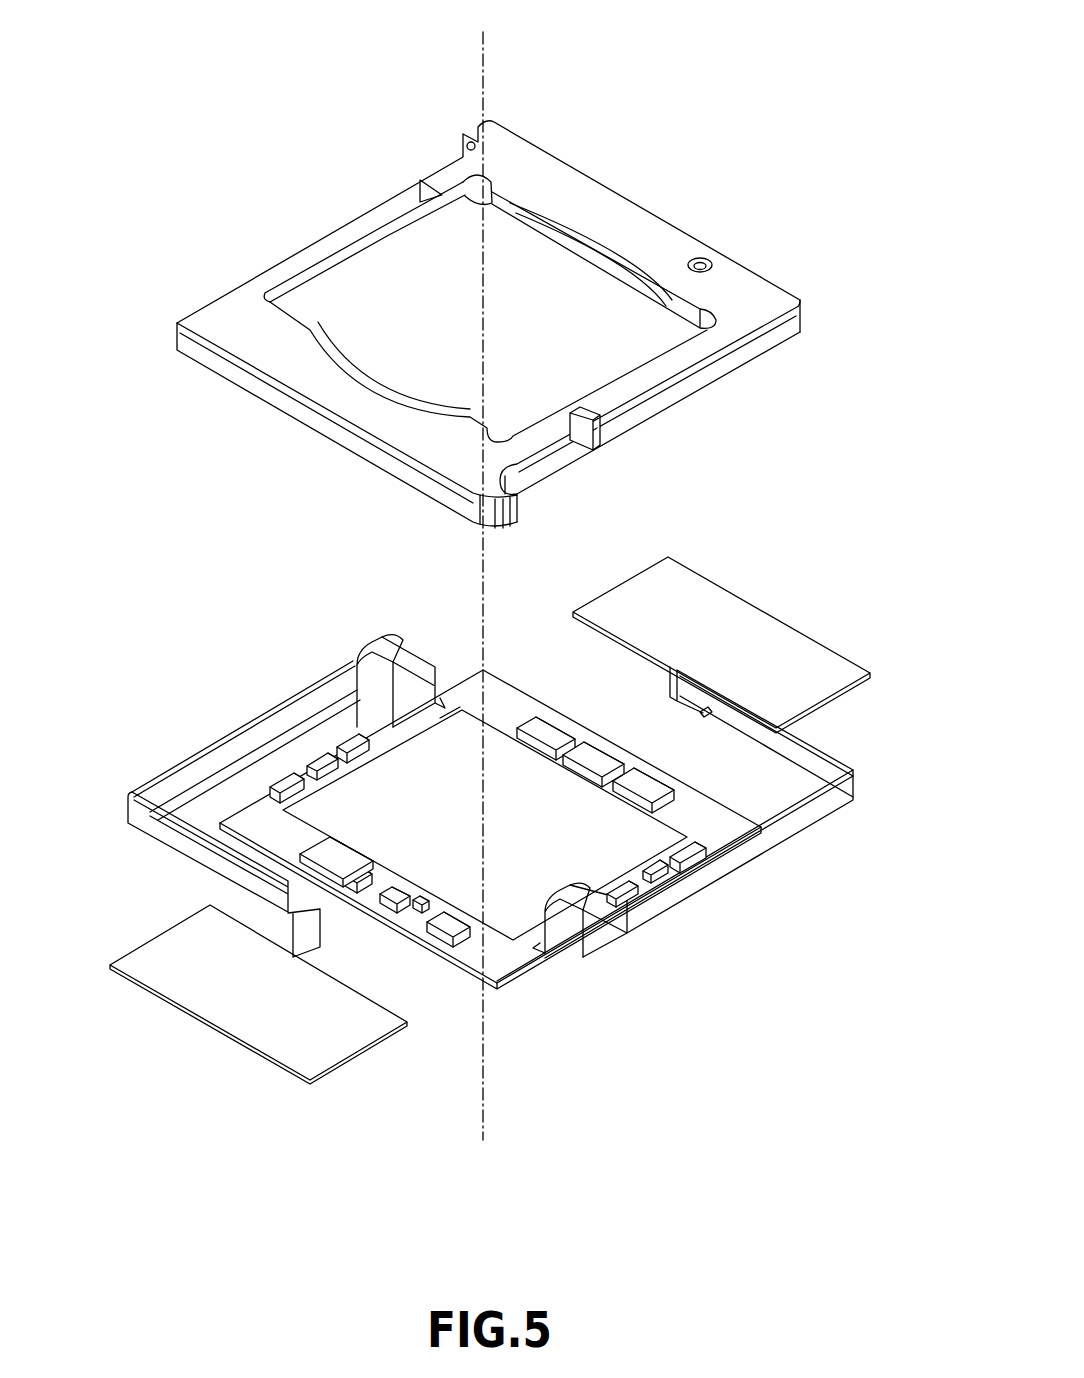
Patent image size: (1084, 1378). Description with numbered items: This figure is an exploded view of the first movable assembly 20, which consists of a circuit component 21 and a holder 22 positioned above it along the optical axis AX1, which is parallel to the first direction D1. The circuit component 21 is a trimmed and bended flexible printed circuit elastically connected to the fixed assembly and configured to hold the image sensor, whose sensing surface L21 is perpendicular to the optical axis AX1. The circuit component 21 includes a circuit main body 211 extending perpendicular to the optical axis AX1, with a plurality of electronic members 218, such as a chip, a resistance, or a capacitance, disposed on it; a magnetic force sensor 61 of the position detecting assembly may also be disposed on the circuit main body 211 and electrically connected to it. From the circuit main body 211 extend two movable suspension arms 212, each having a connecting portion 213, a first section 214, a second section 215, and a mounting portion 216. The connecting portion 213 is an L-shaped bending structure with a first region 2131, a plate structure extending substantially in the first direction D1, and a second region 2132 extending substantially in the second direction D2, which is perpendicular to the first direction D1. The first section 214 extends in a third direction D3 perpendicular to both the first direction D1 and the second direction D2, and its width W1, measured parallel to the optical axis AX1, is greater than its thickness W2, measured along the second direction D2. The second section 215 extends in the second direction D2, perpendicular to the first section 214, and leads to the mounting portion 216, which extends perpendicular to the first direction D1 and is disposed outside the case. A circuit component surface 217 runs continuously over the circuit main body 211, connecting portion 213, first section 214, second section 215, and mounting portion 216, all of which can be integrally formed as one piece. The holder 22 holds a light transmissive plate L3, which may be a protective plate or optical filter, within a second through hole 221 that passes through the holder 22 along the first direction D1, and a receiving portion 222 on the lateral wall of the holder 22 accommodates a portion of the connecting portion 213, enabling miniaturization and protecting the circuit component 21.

The first movable assembly 20 is at (840, 425).
The circuit component 21 is at (718, 558).
The holder 22 is at (736, 391).
The second through hole 221 is at (617, 237).
The receiving portion 222 is at (407, 197).
The circuit main body 211 is at (750, 812).
The movable suspension arm 212 is at (171, 763).
The connecting portion 213 is at (278, 585).
The first region 2131 is at (432, 688).
The second region 2132 is at (390, 650).
The first section 214 is at (343, 678).
The second section 215 is at (163, 827).
The mounting portion 216 is at (777, 640).
The circuit component surface 217 is at (722, 822).
The electronic member 218 is at (597, 753).
The magnetic force sensor 61 is at (372, 872).
The light transmissive plate L3 is at (387, 307).
The sensing surface L21 is at (500, 757).
The optical axis AX1 is at (481, 573).
The width W1 is at (212, 790).
The thickness W2 is at (287, 730).
The first direction D1 is at (806, 1013).
The second direction D2 is at (886, 1160).
The third direction D3 is at (785, 1124).